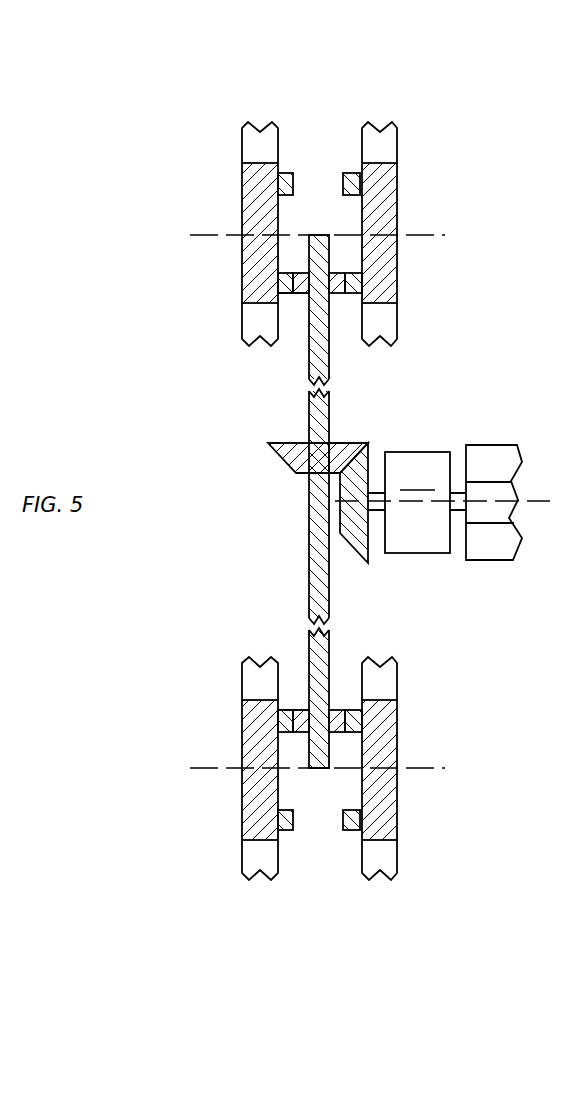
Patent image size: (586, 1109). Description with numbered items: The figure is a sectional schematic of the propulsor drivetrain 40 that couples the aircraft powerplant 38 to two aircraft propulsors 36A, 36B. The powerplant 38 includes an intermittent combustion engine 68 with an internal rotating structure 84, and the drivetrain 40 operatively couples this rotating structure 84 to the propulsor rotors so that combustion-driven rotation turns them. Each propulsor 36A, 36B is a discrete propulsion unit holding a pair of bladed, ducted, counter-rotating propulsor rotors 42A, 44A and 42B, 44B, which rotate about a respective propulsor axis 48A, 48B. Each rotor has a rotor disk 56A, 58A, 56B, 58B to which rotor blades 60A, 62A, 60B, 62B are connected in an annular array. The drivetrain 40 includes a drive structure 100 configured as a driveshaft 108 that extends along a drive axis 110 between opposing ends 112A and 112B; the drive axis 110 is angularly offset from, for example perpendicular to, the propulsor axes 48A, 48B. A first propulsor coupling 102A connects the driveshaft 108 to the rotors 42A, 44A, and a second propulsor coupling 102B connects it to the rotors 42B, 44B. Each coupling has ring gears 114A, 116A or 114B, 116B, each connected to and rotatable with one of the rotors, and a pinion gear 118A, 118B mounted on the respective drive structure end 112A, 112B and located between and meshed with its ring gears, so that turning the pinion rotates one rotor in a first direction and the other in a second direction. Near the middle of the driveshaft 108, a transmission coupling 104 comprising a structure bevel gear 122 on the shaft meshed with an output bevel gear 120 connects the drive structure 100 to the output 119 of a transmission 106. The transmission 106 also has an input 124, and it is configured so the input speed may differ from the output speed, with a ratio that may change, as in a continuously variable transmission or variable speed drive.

The first aircraft propulsor 36A is at (437, 101).
The second aircraft propulsor 36B is at (440, 907).
The aircraft powerplant 38 is at (513, 438).
The propulsor drivetrain 40 is at (197, 546).
The first propulsor rotor 42A is at (258, 116).
The second propulsor rotor 44A is at (378, 116).
The first propulsor rotor 42B is at (258, 889).
The second propulsor rotor 44B is at (378, 889).
The propulsor axis 48A is at (435, 235).
The propulsor axis 48B is at (435, 768).
The rotor disk 56A is at (242, 190).
The rotor disk 58A is at (397, 189).
The rotor disk 56B is at (242, 738).
The rotor disk 58B is at (397, 753).
The rotor blades 60A is at (242, 141).
The rotor blades 62A is at (397, 141).
The rotor blades 60B is at (242, 678).
The rotor blades 62B is at (397, 678).
The intermittent combustion engine 68 is at (512, 560).
The rotating structure 84 is at (495, 482).
The drive structure 100 is at (302, 522).
The first propulsor coupling 102A is at (294, 258).
The second propulsor coupling 102B is at (294, 749).
The transmission coupling 104 is at (376, 433).
The transmission 106 is at (417, 502).
The driveshaft 108 is at (308, 573).
The drive axis 110 is at (332, 598).
The first end of drive structure 112A is at (313, 233).
The second end of drive structure 112B is at (313, 768).
The first ring gear 114A is at (283, 172).
The second ring gear 116A is at (351, 172).
The first ring gear 114B is at (278, 713).
The second ring gear 116B is at (362, 713).
The pinion gear 118A is at (300, 294).
The pinion gear 118B is at (302, 708).
The transmission output 119 is at (374, 512).
The output bevel gear 120 is at (340, 556).
The structure bevel gear 122 is at (286, 466).
The transmission input 124 is at (455, 512).